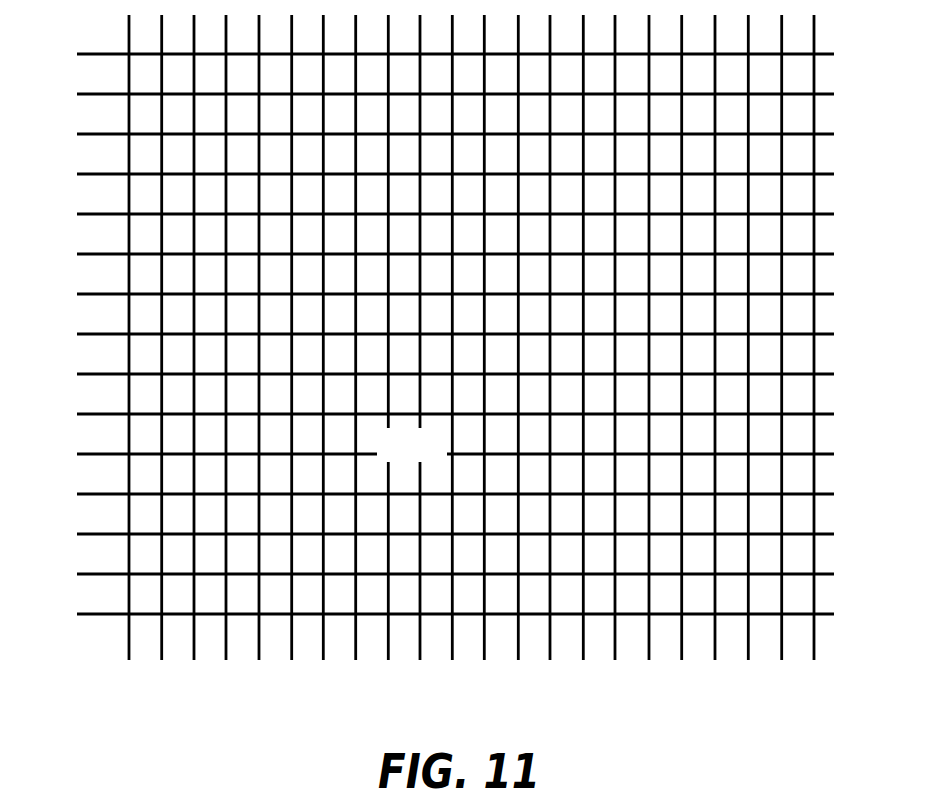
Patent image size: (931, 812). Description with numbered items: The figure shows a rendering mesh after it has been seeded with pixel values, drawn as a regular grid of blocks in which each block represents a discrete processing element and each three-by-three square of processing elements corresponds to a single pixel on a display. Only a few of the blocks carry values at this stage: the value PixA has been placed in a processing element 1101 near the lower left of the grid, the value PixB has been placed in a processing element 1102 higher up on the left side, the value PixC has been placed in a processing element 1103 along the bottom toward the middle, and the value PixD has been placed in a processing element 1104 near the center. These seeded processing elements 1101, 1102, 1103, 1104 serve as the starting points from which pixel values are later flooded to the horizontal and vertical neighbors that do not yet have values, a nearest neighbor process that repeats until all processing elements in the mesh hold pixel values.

The processing element 1101 is at (168, 581).
The processing element 1102 is at (228, 345).
The processing element 1103 is at (497, 610).
The processing element 1104 is at (438, 368).